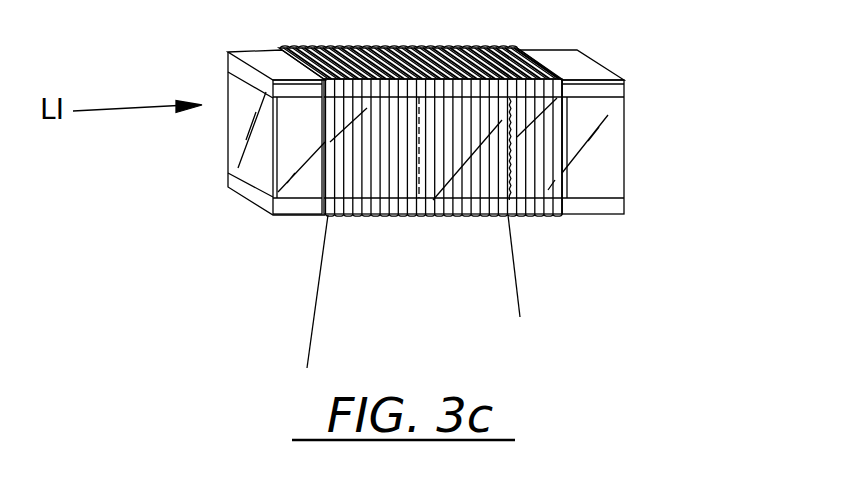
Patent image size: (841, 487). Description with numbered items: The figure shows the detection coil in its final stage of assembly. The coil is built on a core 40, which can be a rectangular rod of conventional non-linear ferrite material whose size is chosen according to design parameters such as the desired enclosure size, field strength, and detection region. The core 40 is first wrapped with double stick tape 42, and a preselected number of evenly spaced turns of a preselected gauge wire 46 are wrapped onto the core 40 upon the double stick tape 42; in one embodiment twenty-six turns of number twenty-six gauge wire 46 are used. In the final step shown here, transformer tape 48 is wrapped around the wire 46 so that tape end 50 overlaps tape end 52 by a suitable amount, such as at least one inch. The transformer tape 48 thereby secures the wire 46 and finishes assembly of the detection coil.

The core 40 is at (417, 184).
The double stick tape 42 is at (488, 62).
The wire 46 is at (315, 292).
The transformer tape 48 is at (233, 140).
The tape end 50 is at (525, 177).
The tape end 52 is at (406, 186).